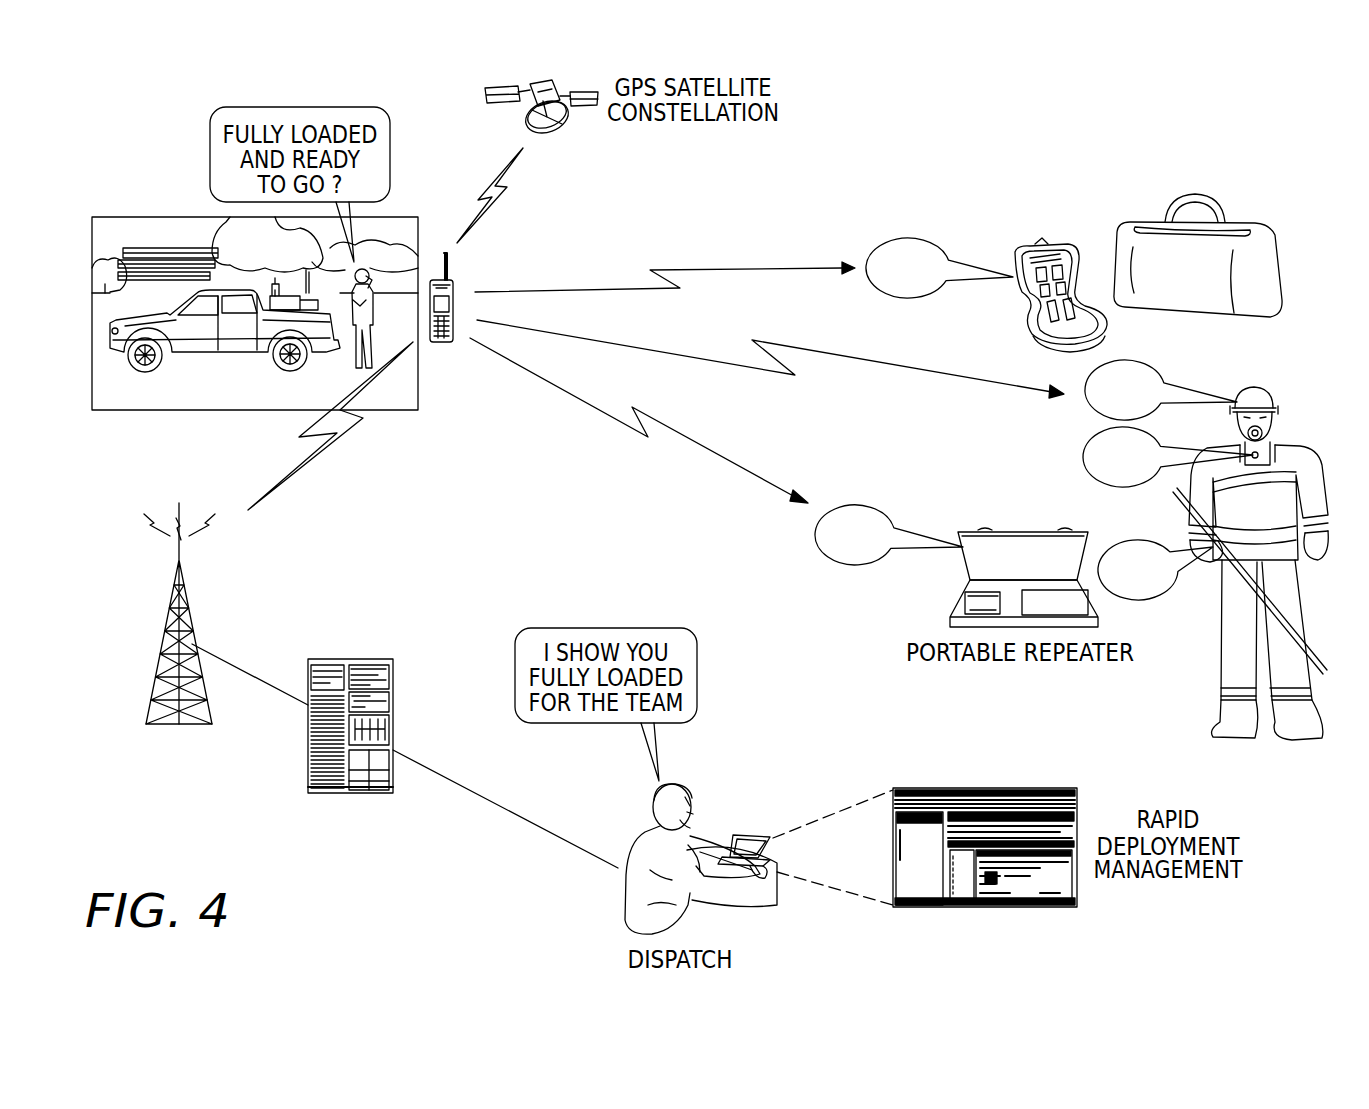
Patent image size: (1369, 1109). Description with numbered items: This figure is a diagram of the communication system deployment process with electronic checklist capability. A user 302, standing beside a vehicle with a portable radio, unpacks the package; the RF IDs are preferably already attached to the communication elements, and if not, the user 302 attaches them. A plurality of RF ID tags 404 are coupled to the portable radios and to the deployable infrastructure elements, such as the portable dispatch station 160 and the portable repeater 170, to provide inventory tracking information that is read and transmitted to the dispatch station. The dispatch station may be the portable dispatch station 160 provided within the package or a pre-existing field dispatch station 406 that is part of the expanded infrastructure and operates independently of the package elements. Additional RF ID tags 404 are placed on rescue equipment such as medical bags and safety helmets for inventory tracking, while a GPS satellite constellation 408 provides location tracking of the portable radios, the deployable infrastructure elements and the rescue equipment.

The portable dispatch station 160 is at (276, 287).
The user 302 is at (355, 372).
The GPS satellite constellation 408 is at (485, 93).
The RF ID tag 404 is at (910, 237).
The deployable infrastructure element 170 is at (1025, 530).
The field dispatch station 406 is at (773, 761).